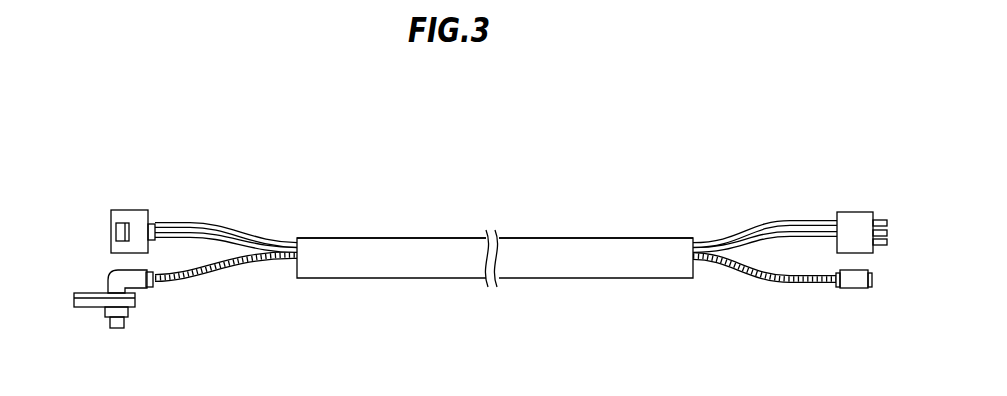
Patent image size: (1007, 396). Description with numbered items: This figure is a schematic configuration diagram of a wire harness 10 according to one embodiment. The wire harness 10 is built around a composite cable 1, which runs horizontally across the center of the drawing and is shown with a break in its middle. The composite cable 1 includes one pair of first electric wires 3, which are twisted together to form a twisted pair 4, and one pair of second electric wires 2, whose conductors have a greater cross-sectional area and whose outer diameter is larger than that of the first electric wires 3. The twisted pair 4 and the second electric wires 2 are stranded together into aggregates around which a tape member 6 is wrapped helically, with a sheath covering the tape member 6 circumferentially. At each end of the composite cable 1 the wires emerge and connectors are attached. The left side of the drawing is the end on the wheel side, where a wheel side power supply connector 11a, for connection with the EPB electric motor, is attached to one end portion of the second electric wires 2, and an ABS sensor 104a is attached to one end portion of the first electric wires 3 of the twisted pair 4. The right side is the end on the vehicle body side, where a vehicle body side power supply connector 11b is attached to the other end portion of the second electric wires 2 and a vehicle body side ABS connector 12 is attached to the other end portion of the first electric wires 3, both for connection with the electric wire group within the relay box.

The composite cable 1 is at (521, 237).
The second electric wires 2 is at (193, 233).
The first electric wires 3 is at (200, 283).
The twisted pair 4 is at (240, 273).
The tape member 6 is at (617, 270).
The wire harness 10 is at (643, 186).
The wheel side power supply connector 11a is at (111, 237).
The vehicle body side power supply connector 11b is at (890, 236).
The vehicle body side ABS connector 12 is at (872, 278).
The ABS sensor 104a is at (110, 278).